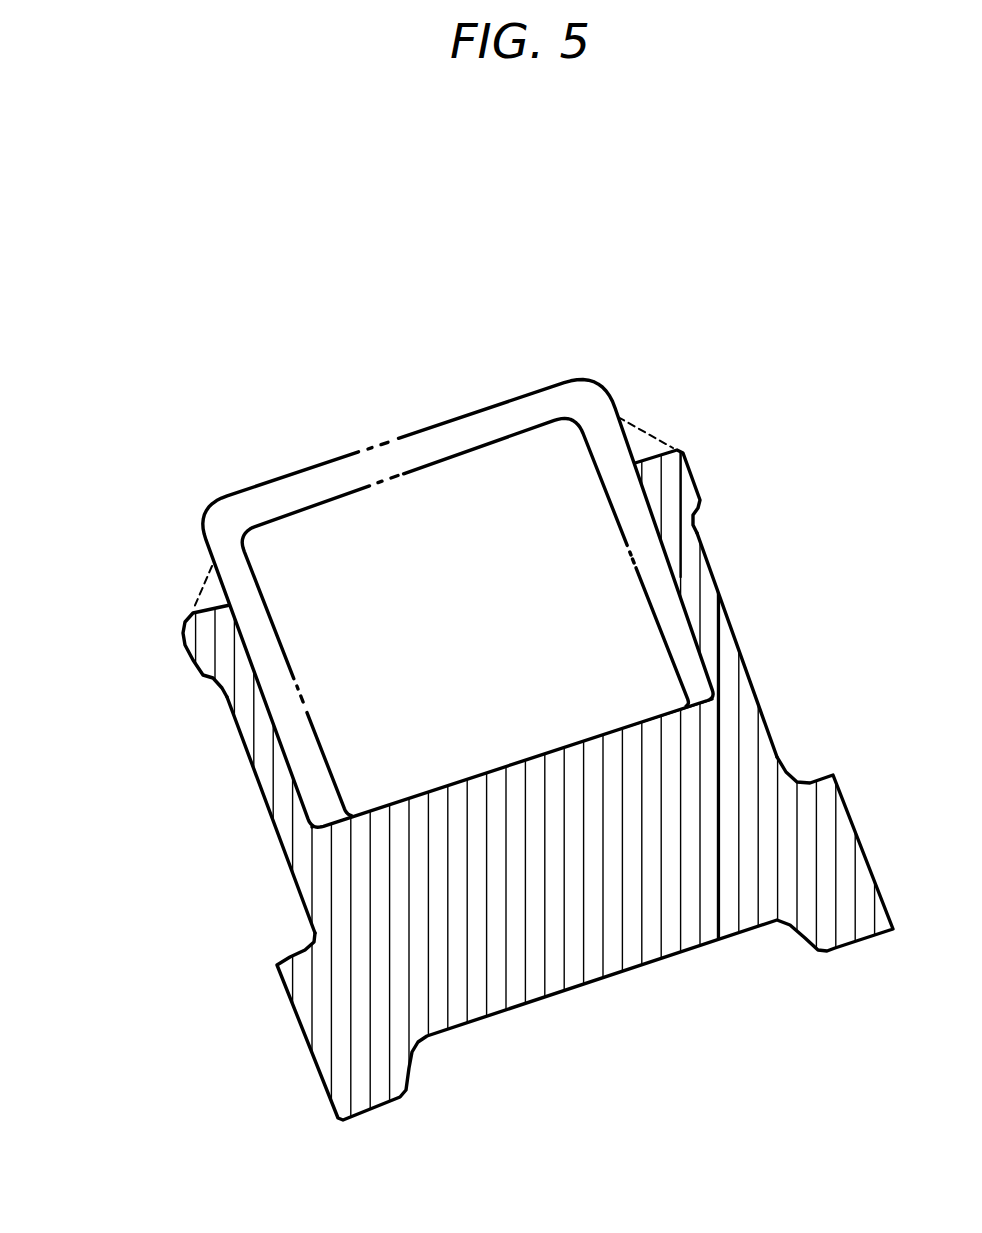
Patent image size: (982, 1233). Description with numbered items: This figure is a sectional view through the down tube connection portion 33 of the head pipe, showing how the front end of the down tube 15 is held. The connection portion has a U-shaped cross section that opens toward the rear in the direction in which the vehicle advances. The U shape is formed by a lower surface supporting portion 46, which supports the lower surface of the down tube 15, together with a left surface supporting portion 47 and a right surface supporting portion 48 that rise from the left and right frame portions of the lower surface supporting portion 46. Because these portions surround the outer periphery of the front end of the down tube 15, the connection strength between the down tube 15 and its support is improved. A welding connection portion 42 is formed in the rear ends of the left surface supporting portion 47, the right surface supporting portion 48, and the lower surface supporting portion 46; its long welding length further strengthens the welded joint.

The down tube 15 is at (415, 430).
The down tube connection portion 33 is at (634, 997).
The welding connection portion 42 is at (192, 648).
The lower surface supporting portion 46 is at (420, 793).
The left surface supporting portion 47 is at (733, 638).
The right surface supporting portion 48 is at (233, 718).